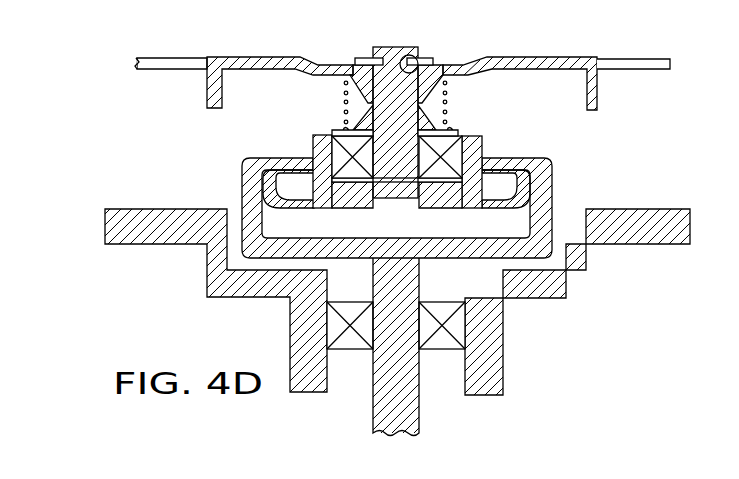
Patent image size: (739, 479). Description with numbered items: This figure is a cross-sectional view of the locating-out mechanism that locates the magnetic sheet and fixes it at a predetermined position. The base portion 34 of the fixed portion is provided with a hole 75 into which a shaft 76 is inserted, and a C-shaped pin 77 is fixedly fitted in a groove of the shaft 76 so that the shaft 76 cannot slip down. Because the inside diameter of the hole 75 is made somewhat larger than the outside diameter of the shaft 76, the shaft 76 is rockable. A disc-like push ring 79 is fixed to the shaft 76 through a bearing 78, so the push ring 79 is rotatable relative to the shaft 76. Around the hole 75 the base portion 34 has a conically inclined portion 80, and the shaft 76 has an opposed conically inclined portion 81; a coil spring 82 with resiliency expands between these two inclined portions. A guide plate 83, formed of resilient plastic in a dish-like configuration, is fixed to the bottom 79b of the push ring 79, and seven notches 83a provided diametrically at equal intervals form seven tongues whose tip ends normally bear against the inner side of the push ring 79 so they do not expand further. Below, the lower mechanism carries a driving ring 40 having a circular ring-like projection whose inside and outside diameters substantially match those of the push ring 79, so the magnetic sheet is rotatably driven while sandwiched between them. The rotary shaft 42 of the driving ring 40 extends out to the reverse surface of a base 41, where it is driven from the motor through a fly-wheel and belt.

The base portion 34 is at (530, 58).
The driving ring 40 is at (552, 198).
The base 41 is at (642, 235).
The rotary shaft 42 is at (418, 406).
The hole 75 is at (405, 57).
The shaft 76 is at (385, 46).
The C-shaped pin 77 is at (367, 58).
The bearing 78 is at (458, 133).
The push ring 79 is at (434, 177).
The bottom of push ring 79b is at (447, 196).
The conically inclined portion 80 is at (342, 90).
The conically inclined portion 81 is at (342, 128).
The coil spring 82 is at (448, 104).
The guide plate 83 is at (318, 208).
The notches 83a is at (528, 180).